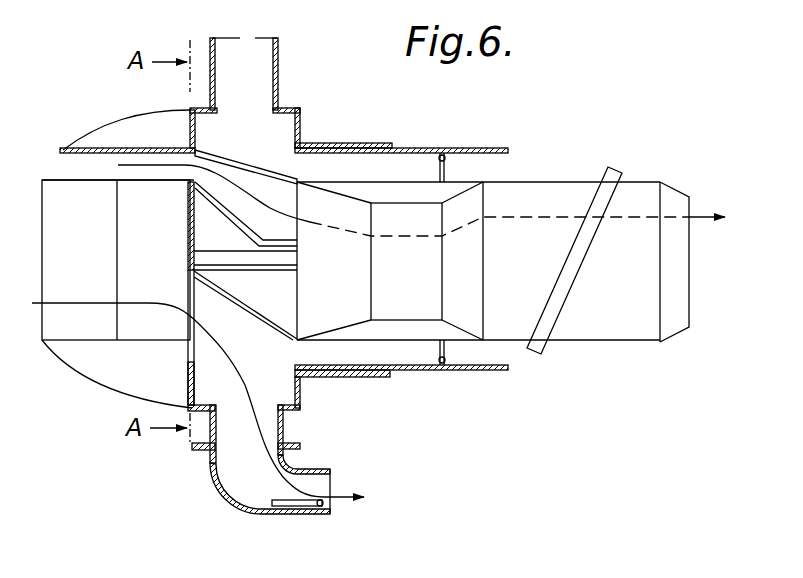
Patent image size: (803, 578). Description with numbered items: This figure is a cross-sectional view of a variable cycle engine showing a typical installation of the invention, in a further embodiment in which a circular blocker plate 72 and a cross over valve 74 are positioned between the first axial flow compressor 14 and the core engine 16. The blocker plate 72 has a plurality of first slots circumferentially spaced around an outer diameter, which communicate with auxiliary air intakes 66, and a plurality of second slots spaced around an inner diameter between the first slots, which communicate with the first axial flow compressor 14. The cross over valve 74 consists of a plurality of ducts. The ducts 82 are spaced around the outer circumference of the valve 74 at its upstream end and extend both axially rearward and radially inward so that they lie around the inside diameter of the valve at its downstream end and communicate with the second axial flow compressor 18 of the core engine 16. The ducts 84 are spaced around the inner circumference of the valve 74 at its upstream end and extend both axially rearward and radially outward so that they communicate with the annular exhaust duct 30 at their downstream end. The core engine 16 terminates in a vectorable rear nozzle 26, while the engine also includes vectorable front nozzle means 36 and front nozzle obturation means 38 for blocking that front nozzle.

The first axial flow compressor 14 is at (138, 197).
The core engine 16 is at (400, 180).
The second axial flow compressor 18 is at (335, 318).
The vectorable rear nozzle 26 is at (662, 182).
The annular exhaust duct 30 is at (280, 132).
The vectorable front nozzle means 36 is at (226, 493).
The front nozzle obturation means 38 is at (288, 515).
The auxiliary air intakes 66 is at (68, 163).
The circular blocker plate 72 is at (188, 322).
The cross over valve 74 is at (256, 165).
The ducts 82 is at (210, 165).
The ducts 84 is at (235, 315).